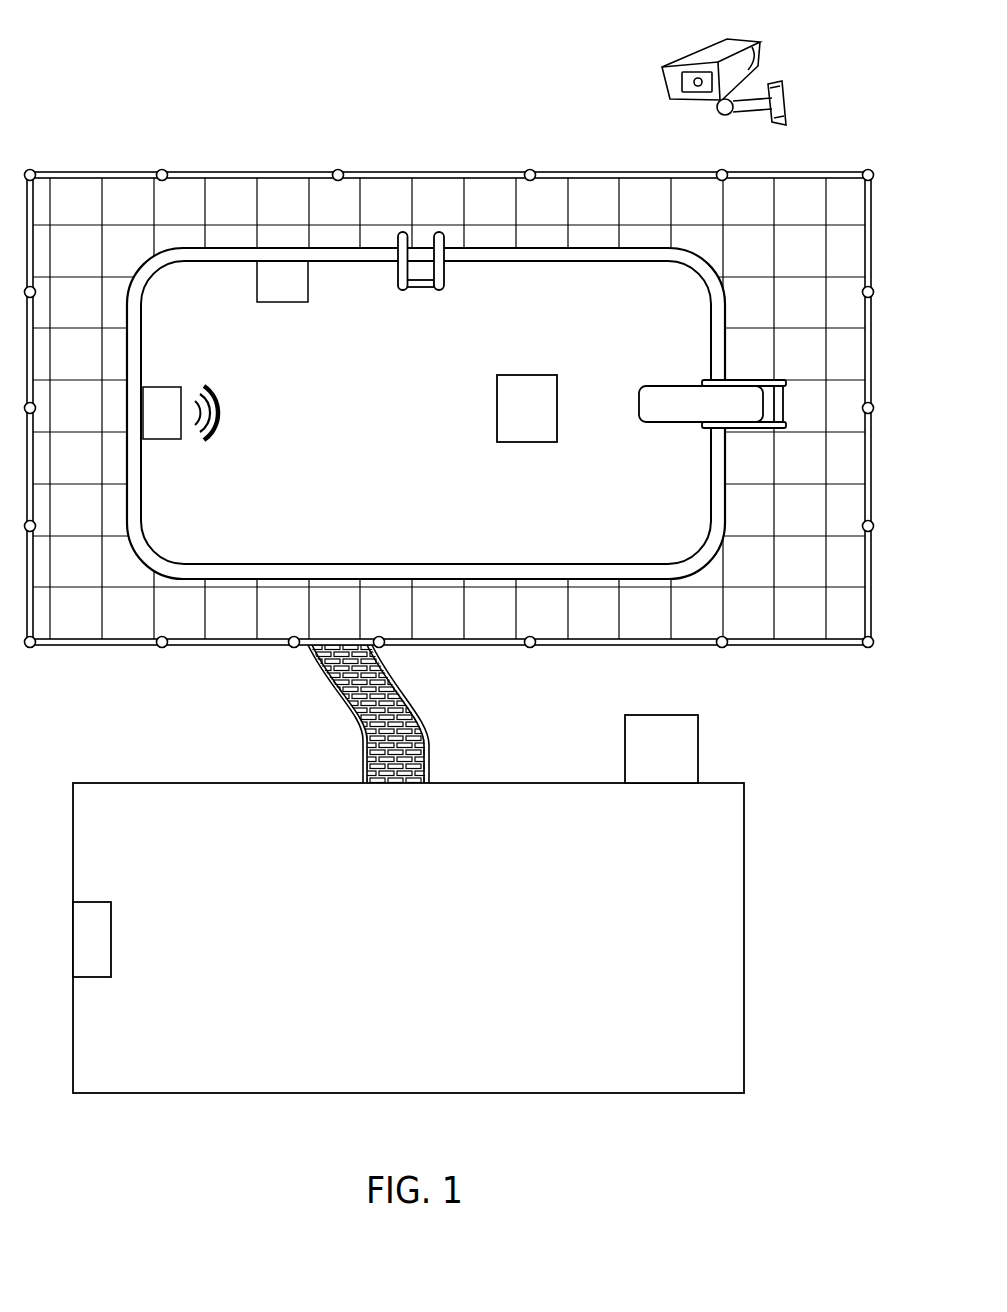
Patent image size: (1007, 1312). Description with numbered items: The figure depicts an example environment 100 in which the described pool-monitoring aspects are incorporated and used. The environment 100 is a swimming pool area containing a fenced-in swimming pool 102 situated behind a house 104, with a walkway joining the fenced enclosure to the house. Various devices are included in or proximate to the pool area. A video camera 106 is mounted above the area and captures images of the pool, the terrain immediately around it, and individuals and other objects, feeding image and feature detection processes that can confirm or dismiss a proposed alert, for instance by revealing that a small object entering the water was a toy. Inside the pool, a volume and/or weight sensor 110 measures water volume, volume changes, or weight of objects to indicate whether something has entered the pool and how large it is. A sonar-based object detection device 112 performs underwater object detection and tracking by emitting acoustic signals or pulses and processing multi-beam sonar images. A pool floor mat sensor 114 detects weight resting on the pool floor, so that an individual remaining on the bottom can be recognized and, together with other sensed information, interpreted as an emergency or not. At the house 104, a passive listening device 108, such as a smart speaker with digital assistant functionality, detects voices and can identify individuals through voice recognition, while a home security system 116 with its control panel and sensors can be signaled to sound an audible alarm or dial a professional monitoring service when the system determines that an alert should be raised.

The environment 100 is at (188, 91).
The swimming pool 102 is at (403, 538).
The house 104 is at (383, 893).
The video camera 106 is at (698, 57).
The passive listening device 108 is at (624, 740).
The volume and/or weight sensor 110 is at (283, 302).
The sonar-based object detection device 112 is at (165, 439).
The pool floor mat sensor 114 is at (497, 407).
The home security system 116 is at (112, 938).